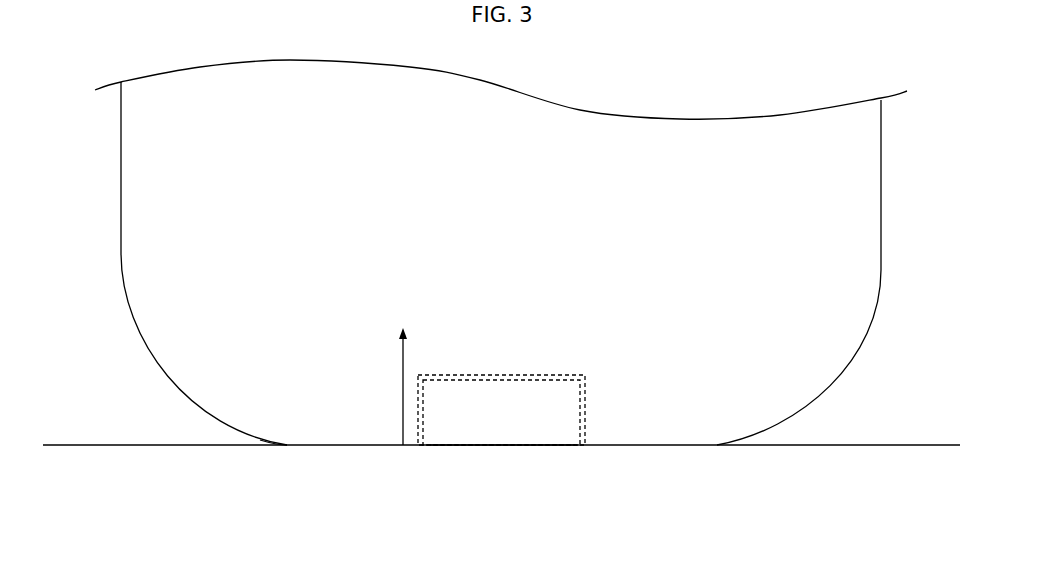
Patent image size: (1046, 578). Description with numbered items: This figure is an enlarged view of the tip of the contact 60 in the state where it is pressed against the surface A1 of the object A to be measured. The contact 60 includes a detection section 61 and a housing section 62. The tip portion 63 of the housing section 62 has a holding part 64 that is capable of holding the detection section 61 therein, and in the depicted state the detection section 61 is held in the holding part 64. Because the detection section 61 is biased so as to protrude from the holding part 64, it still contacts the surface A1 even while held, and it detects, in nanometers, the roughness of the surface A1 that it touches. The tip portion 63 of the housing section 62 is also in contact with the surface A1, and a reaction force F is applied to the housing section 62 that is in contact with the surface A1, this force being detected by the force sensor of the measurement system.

The contact 60 is at (888, 129).
The housing section 62 is at (884, 197).
The tip portion 63 is at (347, 447).
The holding part 64 is at (585, 373).
The detection section 61 is at (502, 430).
The reaction force F is at (403, 398).
The object to be measured A is at (878, 441).
The surface A1 is at (920, 445).